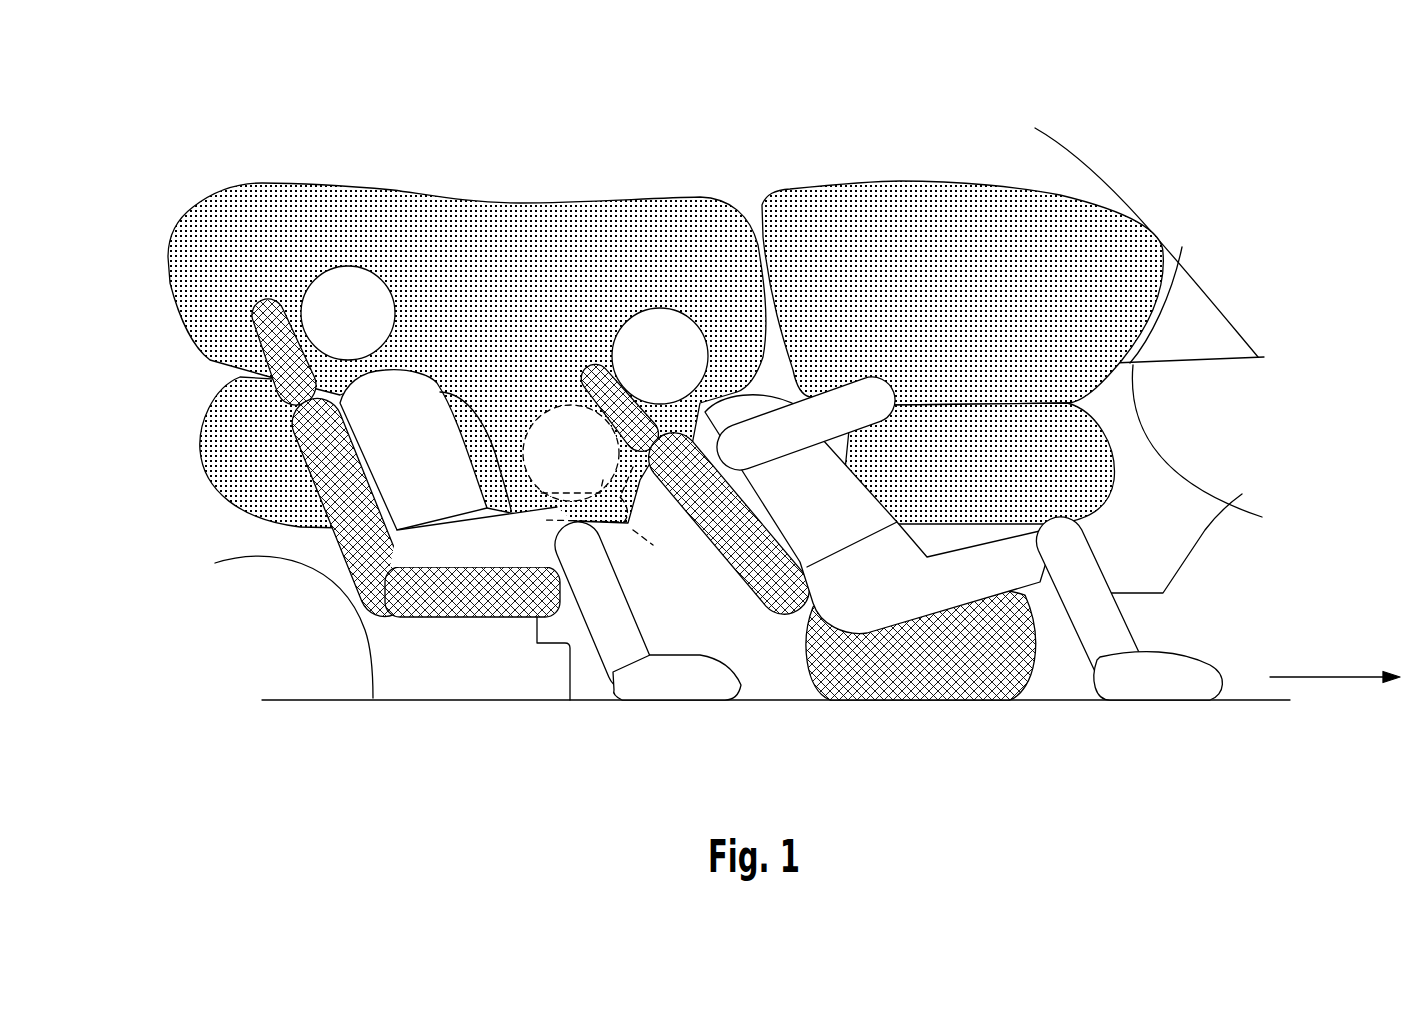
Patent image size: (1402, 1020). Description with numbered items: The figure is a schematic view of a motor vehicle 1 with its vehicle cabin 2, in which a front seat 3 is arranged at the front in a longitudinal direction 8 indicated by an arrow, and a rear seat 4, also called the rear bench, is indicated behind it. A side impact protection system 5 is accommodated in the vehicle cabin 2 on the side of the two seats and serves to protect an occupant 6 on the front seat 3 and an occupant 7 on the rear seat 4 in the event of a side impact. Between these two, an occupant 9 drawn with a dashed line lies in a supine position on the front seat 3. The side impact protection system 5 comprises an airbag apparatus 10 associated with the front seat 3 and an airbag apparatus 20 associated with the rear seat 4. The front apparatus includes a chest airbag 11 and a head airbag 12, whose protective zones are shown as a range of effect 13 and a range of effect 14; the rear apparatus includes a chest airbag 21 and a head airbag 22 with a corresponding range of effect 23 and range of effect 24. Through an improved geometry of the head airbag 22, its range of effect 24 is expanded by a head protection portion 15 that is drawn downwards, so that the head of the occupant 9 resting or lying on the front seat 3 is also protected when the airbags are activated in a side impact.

The motor vehicle 1 is at (1165, 177).
The vehicle cabin 2 is at (618, 297).
The front seat 3 is at (960, 663).
The rear seat 4 is at (453, 617).
The side impact protection system 5 is at (1167, 242).
The occupant 6 is at (803, 508).
The occupant 7 is at (398, 453).
The longitudinal direction 8 is at (1328, 680).
The occupant in supine position 9 is at (584, 454).
The airbag apparatus 10 is at (761, 301).
The chest airbag 11 is at (761, 358).
The head airbag 12 is at (1017, 268).
The range of effect 13 is at (1080, 480).
The range of effect 14 is at (913, 253).
The head protection portion 15 is at (603, 507).
The airbag apparatus 20 is at (423, 193).
The chest airbag 21 is at (220, 458).
The head airbag 22 is at (183, 283).
The range of effect 23 is at (498, 467).
The range of effect 24 is at (647, 262).